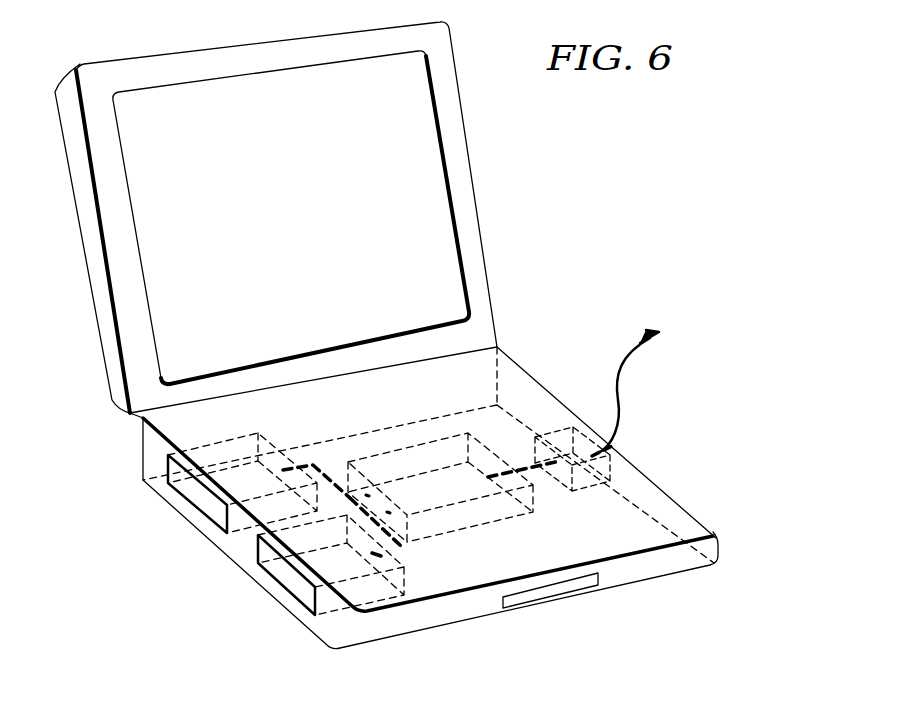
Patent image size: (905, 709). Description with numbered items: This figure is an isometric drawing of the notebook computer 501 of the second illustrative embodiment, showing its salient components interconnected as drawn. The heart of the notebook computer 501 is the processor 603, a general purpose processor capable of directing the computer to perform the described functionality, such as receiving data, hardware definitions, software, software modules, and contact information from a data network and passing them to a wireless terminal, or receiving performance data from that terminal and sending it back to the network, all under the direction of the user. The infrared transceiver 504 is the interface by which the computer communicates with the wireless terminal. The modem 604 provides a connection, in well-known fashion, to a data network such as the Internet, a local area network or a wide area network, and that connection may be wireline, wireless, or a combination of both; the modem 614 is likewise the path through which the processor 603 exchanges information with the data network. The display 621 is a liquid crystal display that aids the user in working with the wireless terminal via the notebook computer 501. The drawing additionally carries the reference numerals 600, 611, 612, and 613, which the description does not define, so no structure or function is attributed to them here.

The notebook computer 501 is at (630, 575).
The infrared transceiver 504 is at (208, 503).
The portable computer system 600 is at (626, 119).
The processor 603 is at (485, 513).
The modem 604 is at (610, 468).
The data bus connection 611 is at (312, 463).
The data bus connection 612 is at (395, 553).
The data bus connection 613 is at (520, 470).
The modem 614 is at (613, 362).
The display 621 is at (457, 292).